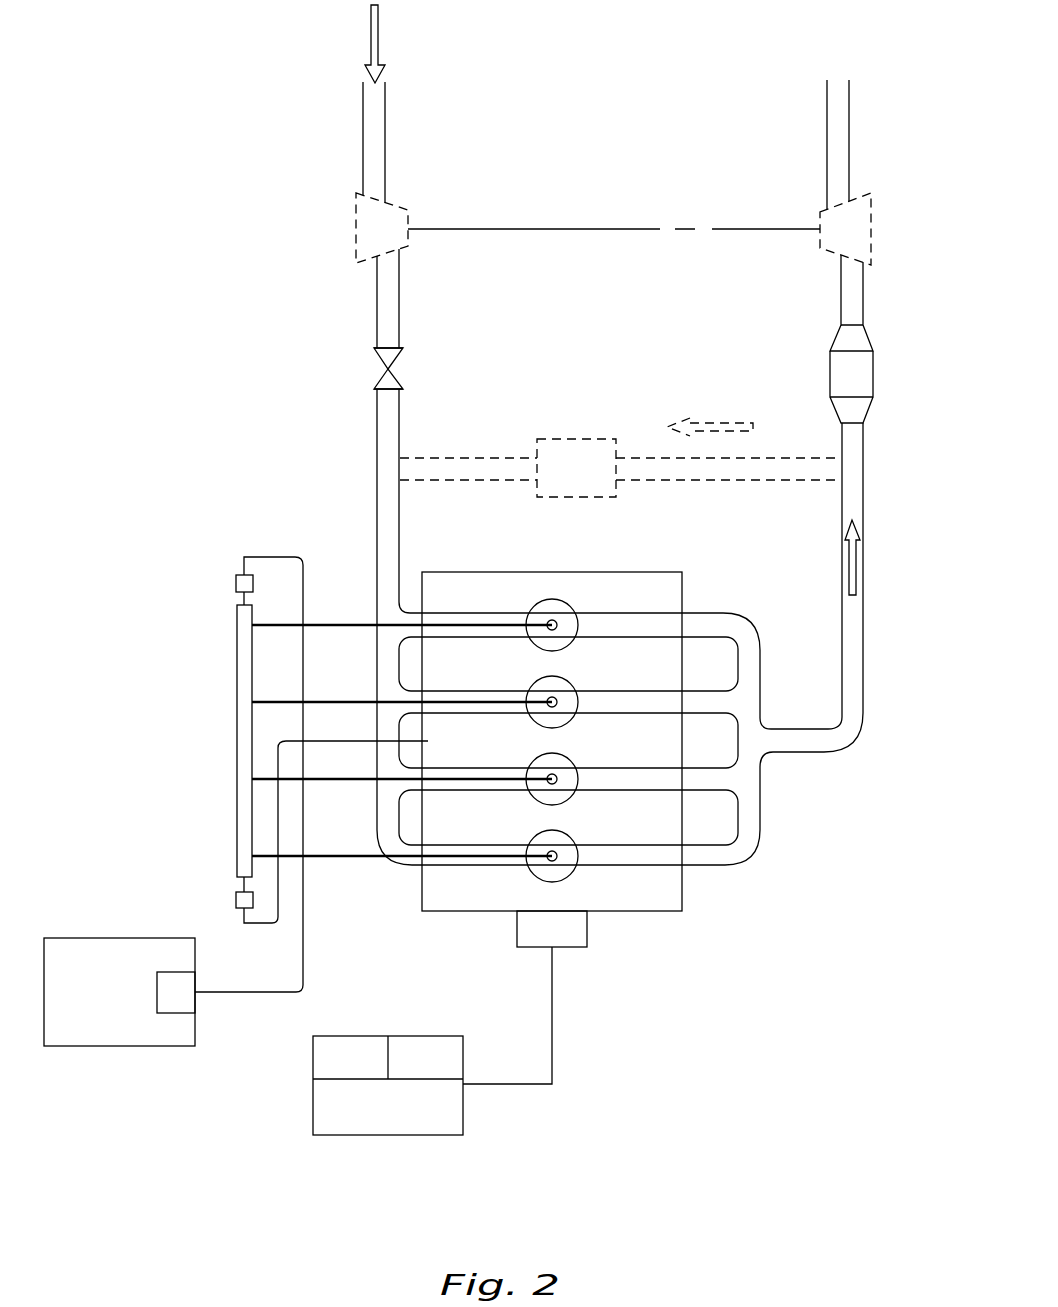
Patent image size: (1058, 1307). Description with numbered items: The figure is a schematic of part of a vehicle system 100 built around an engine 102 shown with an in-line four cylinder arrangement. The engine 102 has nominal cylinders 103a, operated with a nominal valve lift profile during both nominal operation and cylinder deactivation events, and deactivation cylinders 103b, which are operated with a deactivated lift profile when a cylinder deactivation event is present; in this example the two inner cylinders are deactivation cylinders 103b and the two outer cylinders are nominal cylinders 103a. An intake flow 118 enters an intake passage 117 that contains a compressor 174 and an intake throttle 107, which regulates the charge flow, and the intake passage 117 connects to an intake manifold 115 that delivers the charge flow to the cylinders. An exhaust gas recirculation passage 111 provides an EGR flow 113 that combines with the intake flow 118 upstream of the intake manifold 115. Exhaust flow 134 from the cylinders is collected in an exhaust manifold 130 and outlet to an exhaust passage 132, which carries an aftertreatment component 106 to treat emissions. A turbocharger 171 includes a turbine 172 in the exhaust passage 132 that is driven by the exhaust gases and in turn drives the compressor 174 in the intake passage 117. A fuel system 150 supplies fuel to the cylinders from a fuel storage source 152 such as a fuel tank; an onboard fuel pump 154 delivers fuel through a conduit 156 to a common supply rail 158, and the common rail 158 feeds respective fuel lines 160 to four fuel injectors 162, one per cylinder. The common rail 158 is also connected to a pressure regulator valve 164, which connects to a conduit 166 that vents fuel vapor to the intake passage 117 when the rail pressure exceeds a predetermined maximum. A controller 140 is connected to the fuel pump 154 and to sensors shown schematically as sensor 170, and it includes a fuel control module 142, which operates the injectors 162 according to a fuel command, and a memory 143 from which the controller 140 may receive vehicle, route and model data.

The vehicle system 100 is at (198, 210).
The intake flow 118 is at (378, 24).
The compressor 174 is at (356, 210).
The turbocharger 171 is at (615, 210).
The turbine 172 is at (871, 224).
The intake throttle 107 is at (380, 373).
The intake passage 117 is at (377, 458).
The exhaust gas recirculation (EGR) passage 111 is at (487, 457).
The EGR flow 113 is at (707, 423).
The aftertreatment component 106 is at (873, 365).
The exhaust passage 132 is at (865, 648).
The exhaust flow 134 is at (857, 565).
The exhaust manifold 130 is at (760, 815).
The intake manifold 115 is at (392, 870).
The engine 102 is at (678, 922).
The nominal cylinders 103a is at (574, 612).
The deactivation cylinders 103b is at (574, 689).
The fuel injectors 162 is at (552, 620).
The sensor 170 is at (590, 940).
The fuel lines 160 is at (366, 627).
The common supply rail 158 is at (237, 648).
The pressure regulator valve 164 is at (237, 898).
The conduit 166 is at (276, 755).
The conduit 156 is at (303, 968).
The fuel system 150 is at (168, 832).
The fuel storage source 152 is at (105, 1046).
The fuel pump 154 is at (175, 1013).
The controller 140 is at (365, 1148).
The memory 143 is at (351, 1058).
The fuel control module 142 is at (425, 1058).